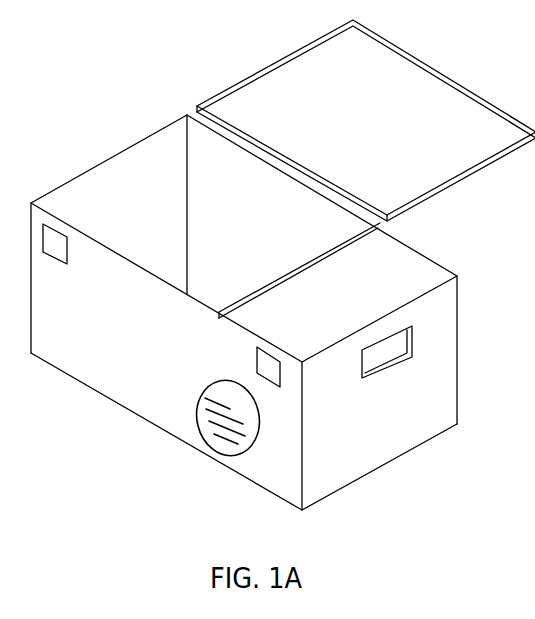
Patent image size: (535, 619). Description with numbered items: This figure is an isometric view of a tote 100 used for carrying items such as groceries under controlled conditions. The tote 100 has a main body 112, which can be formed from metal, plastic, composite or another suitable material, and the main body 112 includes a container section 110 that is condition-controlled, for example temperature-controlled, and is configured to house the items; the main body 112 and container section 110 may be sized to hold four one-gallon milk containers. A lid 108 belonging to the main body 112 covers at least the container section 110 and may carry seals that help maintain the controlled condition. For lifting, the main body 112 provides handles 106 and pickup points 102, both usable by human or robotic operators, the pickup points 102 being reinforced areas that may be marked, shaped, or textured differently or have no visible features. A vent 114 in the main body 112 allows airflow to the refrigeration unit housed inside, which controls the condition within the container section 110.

The tote 100 is at (135, 62).
The pickup points 102 is at (67, 266).
The handles 106 is at (399, 366).
The lid 108 is at (457, 81).
The container section 110 is at (200, 210).
The main body 112 is at (459, 296).
The vent 114 is at (197, 405).